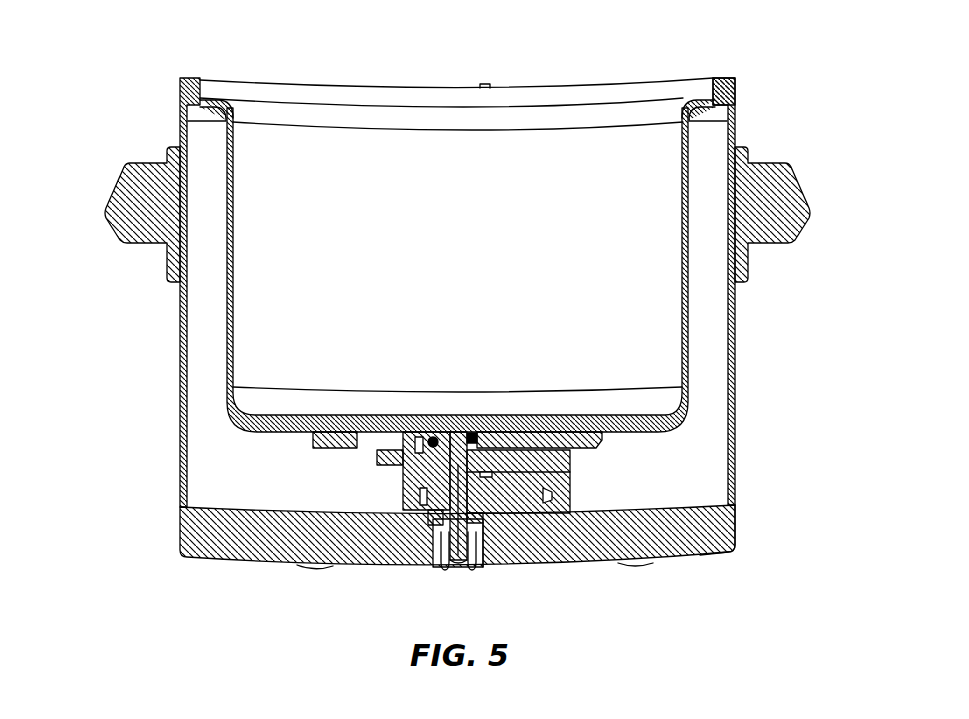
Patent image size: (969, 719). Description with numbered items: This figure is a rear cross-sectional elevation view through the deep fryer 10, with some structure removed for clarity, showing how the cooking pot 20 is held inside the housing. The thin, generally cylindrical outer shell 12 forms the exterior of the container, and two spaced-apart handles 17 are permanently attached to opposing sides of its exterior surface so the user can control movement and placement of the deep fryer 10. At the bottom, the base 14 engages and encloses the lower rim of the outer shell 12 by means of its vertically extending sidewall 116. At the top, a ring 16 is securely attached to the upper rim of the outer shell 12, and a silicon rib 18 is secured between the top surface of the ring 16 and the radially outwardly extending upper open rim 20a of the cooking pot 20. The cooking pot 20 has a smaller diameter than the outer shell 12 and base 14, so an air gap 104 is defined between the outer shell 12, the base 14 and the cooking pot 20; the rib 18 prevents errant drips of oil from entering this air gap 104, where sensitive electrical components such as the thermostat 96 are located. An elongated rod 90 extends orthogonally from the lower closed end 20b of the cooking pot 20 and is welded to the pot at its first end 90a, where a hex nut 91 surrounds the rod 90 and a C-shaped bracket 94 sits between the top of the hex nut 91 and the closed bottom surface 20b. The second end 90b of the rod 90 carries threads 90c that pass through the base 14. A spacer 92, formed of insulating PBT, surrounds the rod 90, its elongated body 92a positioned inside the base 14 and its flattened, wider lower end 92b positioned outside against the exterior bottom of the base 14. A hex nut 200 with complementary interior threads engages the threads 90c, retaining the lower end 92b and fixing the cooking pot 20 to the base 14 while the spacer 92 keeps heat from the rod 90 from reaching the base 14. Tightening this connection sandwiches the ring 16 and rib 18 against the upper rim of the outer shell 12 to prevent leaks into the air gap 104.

The deep fryer 10 is at (247, 43).
The outer shell 12 is at (180, 400).
The base 14 is at (180, 533).
The ring 16 is at (675, 80).
The handles 17 is at (112, 192).
The rib 18 is at (189, 122).
The cooking pot 20 is at (503, 118).
The upper open rim 20a is at (573, 102).
The lower closed end 20b is at (672, 418).
The rod 90 is at (457, 552).
The first end 90a is at (458, 465).
The second end 90b is at (441, 545).
The threads 90c is at (469, 545).
The hex nut 91 is at (402, 482).
The spacer 92 is at (472, 507).
The elongated body 92a is at (570, 470).
The lower end 92b is at (432, 537).
The C-shaped bracket 94 is at (378, 455).
The thermostat 96 is at (399, 499).
The air gap 104 is at (722, 323).
The sidewall 116 is at (735, 532).
The hex nut 200 is at (485, 530).